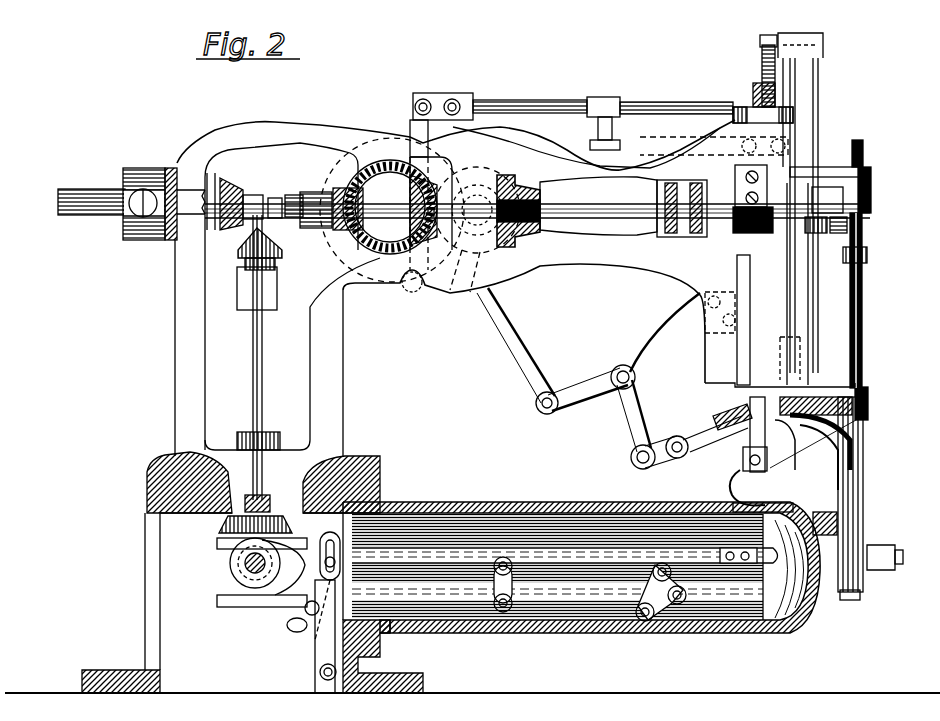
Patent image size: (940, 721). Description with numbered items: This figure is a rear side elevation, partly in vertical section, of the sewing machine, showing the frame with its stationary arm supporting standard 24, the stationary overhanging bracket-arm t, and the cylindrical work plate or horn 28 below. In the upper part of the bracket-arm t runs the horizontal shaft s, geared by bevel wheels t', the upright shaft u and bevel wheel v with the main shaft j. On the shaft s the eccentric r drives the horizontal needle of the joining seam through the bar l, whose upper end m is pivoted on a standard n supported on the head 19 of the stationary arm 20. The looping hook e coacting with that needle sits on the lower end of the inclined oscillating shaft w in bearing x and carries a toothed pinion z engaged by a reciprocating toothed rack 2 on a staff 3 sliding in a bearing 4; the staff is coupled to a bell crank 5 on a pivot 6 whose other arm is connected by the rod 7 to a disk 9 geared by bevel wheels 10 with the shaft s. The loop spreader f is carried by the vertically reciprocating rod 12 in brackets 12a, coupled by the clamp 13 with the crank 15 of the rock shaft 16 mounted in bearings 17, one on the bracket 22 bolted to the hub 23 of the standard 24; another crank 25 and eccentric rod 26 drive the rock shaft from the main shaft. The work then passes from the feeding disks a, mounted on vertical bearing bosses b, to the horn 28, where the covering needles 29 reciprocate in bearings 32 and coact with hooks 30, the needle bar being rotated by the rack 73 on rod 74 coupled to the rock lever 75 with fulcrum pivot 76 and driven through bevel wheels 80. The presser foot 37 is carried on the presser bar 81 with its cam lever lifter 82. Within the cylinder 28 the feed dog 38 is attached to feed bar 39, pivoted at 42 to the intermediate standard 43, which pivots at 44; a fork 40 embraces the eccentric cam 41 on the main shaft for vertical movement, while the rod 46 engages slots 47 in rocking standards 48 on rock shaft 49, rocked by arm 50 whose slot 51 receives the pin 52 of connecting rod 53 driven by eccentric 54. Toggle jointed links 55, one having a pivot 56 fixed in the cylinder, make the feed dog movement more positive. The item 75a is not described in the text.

The reciprocating toothed rack 2 is at (785, 450).
The staff 3 is at (690, 440).
The bearing 4 is at (725, 432).
The bell crank 5 is at (615, 406).
The supporting pivot 6 is at (620, 366).
The rod 7 is at (520, 352).
The disk 9 is at (480, 190).
The bevel wheels 10 is at (510, 175).
The vertically reciprocating rod 12 is at (862, 320).
The brackets 12a is at (871, 180).
The clamp 13 is at (867, 258).
The crank 15 is at (870, 245).
The rock shaft 16 is at (615, 245).
The bearings 17 is at (330, 190).
The head 19 is at (738, 172).
The stationary arm 20 is at (790, 140).
The bracket 22 is at (188, 238).
The hub 23 is at (160, 170).
The stationary arm supporting standard 24 is at (175, 390).
The crank 25 is at (290, 193).
The eccentric rod 26 is at (263, 382).
The cylindrical work plate 28 is at (540, 498).
The vertically reciprocating needles 29 is at (760, 472).
The single thread chain stitch forming hooks 30 is at (760, 50).
The bearings 32 is at (753, 95).
The presser foot 37 is at (735, 490).
The feed dog 38 is at (733, 506).
The feed bar 39 is at (618, 574).
The fork 40 is at (298, 538).
The eccentric cam 41 is at (240, 578).
The pivot 42 is at (512, 565).
The intermediate standard 43 is at (512, 590).
The pivot 44 is at (505, 628).
The rod 46 is at (322, 545).
The slots 47 is at (330, 532).
The rocking standards 48 is at (315, 650).
The rock shaft 49 is at (330, 682).
The arm 50 is at (320, 672).
The slot 51 is at (288, 628).
The pin 52 is at (305, 608).
The connecting rod 53 is at (217, 602).
The eccentric 54 is at (217, 543).
The toggle jointed links 55 is at (650, 593).
The pivot 56 is at (641, 628).
The reciprocating toothed rack 73 is at (795, 115).
The reciprocating rod 74 is at (565, 98).
The rock lever 75 is at (410, 125).
The bracket 75a is at (437, 95).
The fulcrum pivot 76 is at (416, 292).
The bevel wheels 80 is at (370, 245).
The presser bar 81 is at (750, 450).
The cam lever lifter 82 is at (737, 358).
The feeding disks a is at (840, 525).
The vertical bearing bosses b is at (852, 600).
The looping hook e is at (830, 500).
The loop spreader f is at (862, 505).
The main shaft j is at (230, 563).
The bar l is at (818, 314).
The upper end m is at (822, 40).
The standard n is at (793, 33).
The eccentric r is at (684, 185).
The horizontal shaft s is at (85, 215).
The bracket-arm t is at (461, 134).
The bevel wheels t' is at (225, 218).
The upright shaft u is at (253, 352).
The bevel wheel v is at (230, 522).
The oscillating shaft w is at (812, 383).
The bearing x is at (855, 445).
The toothed pinion z is at (841, 402).